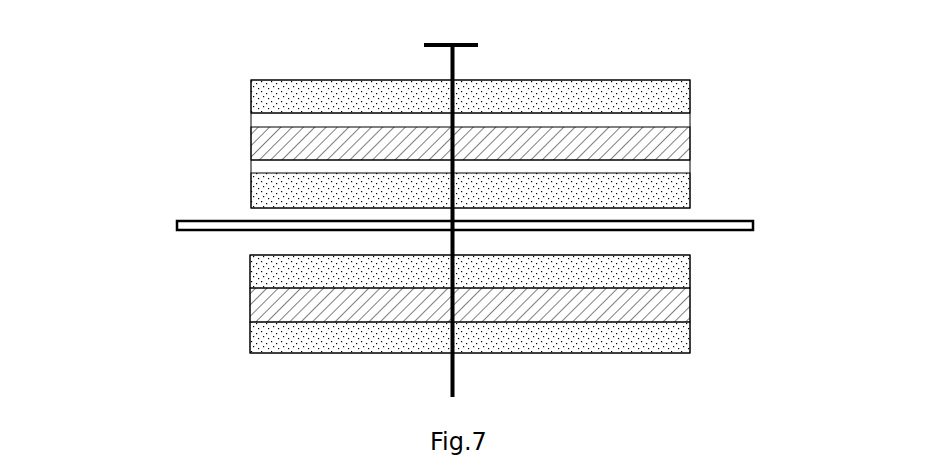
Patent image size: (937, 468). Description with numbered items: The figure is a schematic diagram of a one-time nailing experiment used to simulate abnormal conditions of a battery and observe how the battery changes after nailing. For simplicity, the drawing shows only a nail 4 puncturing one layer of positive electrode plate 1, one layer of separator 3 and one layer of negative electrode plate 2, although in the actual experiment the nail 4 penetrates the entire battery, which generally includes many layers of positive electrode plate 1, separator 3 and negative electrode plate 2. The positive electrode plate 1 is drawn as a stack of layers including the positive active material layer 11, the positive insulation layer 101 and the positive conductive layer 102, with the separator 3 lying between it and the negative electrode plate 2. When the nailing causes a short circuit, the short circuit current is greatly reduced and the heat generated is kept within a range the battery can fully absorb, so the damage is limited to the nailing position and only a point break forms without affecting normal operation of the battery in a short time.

The positive electrode plate 1 is at (458, 119).
The negative electrode plate 2 is at (242, 327).
The separator 3 is at (231, 219).
The nail 4 is at (452, 66).
The positive active material layer 11 is at (662, 98).
The positive insulation layer 101 is at (262, 147).
The positive conductive layer 102 is at (663, 120).